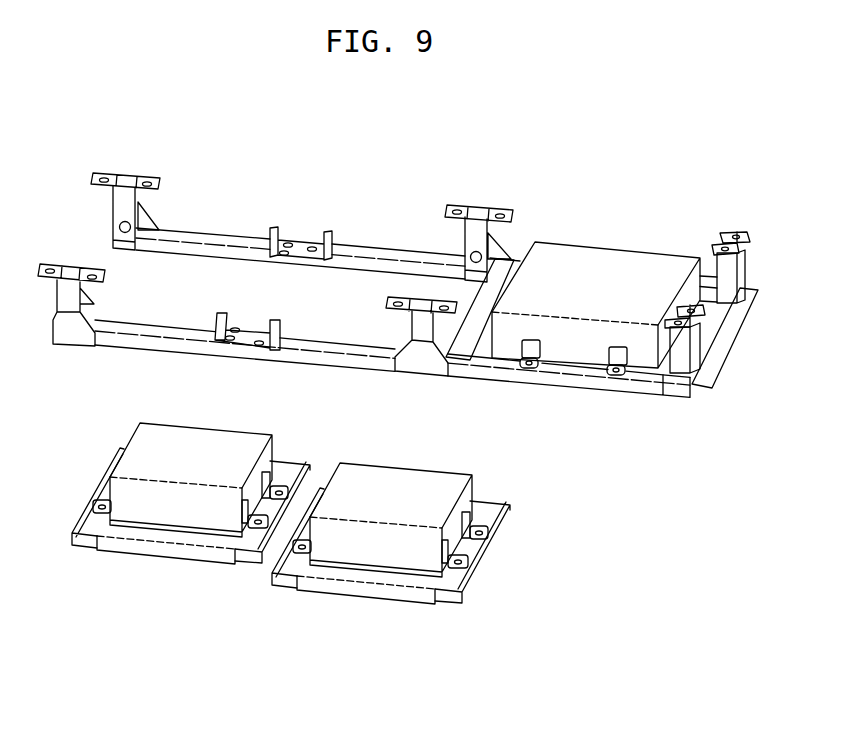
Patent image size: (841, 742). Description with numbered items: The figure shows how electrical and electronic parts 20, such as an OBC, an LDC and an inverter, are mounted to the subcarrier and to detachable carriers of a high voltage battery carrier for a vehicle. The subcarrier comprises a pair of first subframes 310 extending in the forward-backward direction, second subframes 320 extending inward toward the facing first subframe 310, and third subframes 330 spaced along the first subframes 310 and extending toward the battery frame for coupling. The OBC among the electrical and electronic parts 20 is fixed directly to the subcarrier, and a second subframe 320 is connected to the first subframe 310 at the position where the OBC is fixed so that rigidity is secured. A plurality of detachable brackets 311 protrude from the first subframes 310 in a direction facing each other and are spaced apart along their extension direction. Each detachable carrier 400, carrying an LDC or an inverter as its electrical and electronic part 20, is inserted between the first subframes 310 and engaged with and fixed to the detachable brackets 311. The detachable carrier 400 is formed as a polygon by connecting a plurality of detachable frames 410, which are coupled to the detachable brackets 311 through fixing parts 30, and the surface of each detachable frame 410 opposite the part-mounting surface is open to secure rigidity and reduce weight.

The electrical and electronic part 20 is at (608, 262).
The fixing part 30 is at (365, 240).
The first subframe 310 is at (560, 382).
The detachable bracket 311 is at (246, 333).
The second subframe 320 is at (502, 275).
The third subframe 330 is at (143, 177).
The detachable carrier 400 is at (291, 569).
The detachable frame 410 is at (310, 585).